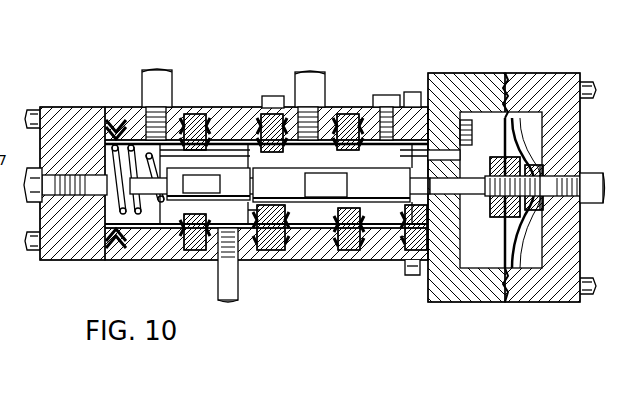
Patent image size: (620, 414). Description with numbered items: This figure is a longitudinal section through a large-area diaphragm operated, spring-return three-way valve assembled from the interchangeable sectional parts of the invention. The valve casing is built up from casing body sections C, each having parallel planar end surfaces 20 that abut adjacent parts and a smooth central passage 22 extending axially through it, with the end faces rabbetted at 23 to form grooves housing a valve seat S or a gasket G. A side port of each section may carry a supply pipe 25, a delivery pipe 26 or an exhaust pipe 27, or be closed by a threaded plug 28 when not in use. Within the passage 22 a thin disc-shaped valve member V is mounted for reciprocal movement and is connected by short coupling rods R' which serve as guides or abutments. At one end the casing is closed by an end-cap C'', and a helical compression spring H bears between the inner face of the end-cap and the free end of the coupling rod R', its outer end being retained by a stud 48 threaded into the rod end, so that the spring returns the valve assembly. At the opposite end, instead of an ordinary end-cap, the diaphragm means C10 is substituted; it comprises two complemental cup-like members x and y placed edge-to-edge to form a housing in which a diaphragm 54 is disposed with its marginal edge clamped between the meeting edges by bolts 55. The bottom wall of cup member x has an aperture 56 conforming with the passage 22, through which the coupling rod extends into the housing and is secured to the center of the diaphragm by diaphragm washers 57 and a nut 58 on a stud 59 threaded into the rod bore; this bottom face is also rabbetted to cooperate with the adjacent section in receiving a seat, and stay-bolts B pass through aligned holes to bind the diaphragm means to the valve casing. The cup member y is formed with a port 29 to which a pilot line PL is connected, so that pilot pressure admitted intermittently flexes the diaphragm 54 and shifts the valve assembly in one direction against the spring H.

The casing end-cap C'' is at (234, 163).
The gasket G is at (124, 120).
The exhaust pipe 27 is at (162, 82).
The casing body section C is at (271, 105).
The valve seat S is at (270, 114).
The end surfaces 20 is at (272, 110).
The supply pipe 25 is at (310, 82).
The threaded plug 28 is at (30, 184).
The diaphragm means C10 is at (460, 75).
The cup member x is at (486, 76).
The cup member y is at (556, 78).
The bolts 55 is at (590, 90).
The diaphragm 54 is at (572, 118).
The stay-bolt B is at (472, 130).
The aperture 56 is at (458, 164).
The stud 59 is at (540, 172).
The port 29 is at (80, 195).
The pilot line PL is at (588, 196).
The nut 58 is at (535, 205).
The diaphragm washers 57 is at (494, 216).
The rabbet 23 is at (418, 255).
The delivery pipe 26 is at (240, 294).
The central bore or passage 22 is at (318, 226).
The valve member V is at (108, 155).
The short coupling rod R' is at (280, 178).
The helical compression spring H is at (128, 172).
The stud 48 is at (158, 194).